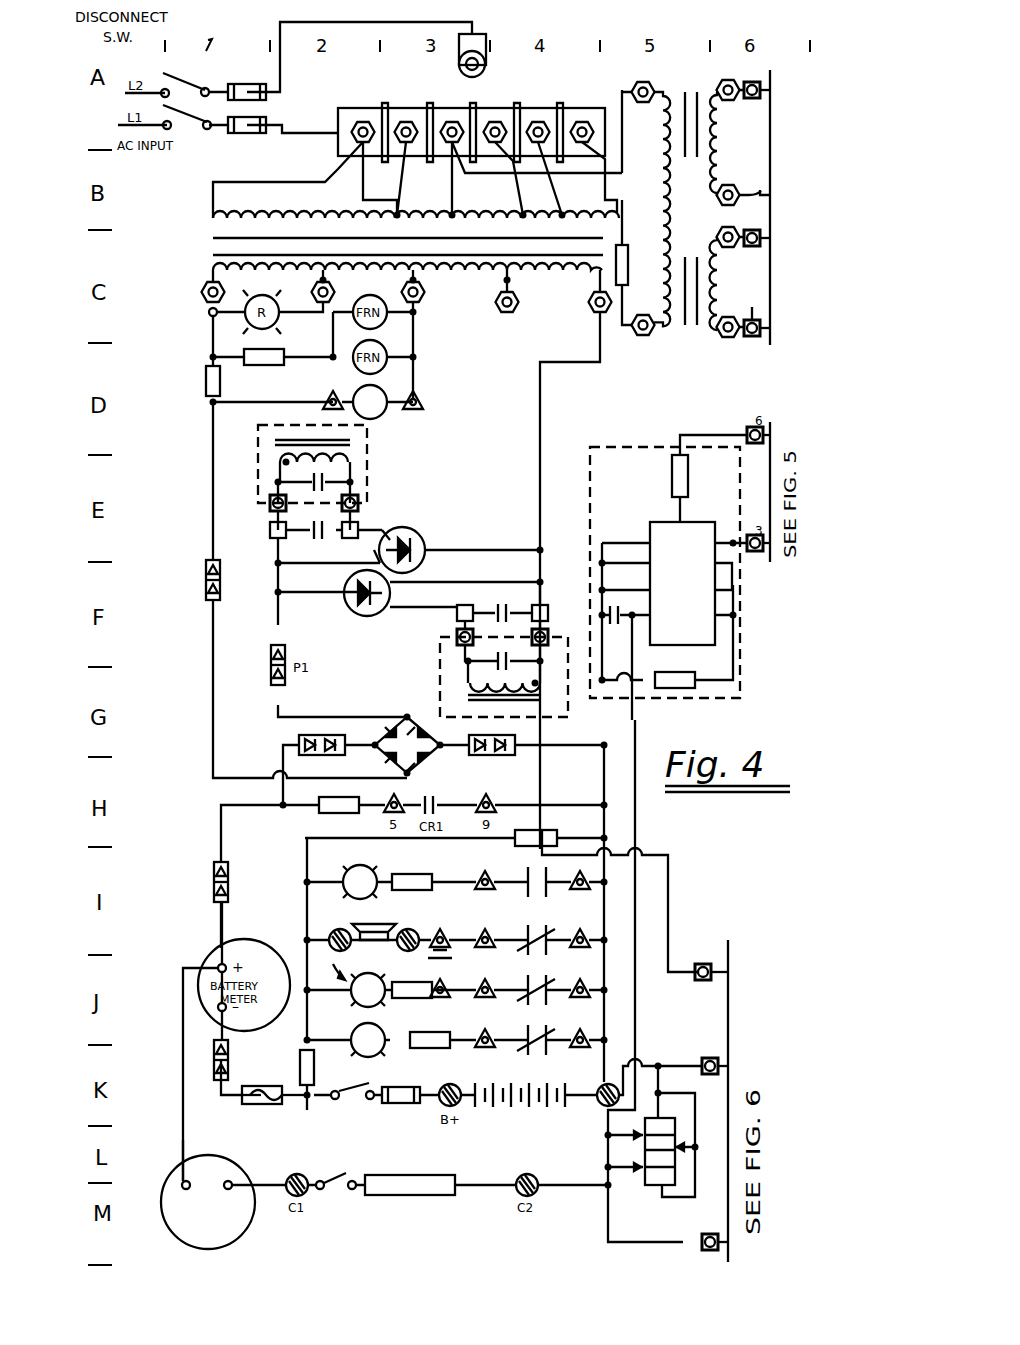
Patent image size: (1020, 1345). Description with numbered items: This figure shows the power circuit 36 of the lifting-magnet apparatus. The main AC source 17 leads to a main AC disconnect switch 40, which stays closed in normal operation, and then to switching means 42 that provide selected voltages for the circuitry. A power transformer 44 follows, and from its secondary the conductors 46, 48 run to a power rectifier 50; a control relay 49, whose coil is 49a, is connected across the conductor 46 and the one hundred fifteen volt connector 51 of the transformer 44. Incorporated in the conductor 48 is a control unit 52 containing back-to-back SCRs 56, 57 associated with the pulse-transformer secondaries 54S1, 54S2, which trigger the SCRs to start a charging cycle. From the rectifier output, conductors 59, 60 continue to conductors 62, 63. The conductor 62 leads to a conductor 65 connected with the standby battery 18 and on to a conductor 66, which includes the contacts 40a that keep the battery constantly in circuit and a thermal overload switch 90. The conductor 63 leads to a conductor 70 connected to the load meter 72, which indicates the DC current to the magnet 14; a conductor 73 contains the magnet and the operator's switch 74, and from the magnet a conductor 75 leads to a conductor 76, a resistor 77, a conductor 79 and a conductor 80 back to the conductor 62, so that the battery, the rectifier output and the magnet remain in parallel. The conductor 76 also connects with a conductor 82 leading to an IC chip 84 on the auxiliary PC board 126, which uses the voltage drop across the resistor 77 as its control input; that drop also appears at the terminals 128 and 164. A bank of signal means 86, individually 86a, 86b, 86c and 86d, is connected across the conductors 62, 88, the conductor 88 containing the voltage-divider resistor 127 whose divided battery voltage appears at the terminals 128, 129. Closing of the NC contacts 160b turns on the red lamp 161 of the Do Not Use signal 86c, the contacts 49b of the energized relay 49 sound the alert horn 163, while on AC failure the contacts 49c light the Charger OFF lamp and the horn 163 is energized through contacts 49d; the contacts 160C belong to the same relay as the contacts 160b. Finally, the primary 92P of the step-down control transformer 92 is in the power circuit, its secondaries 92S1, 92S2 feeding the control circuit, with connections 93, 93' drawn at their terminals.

The power circuit 36 is at (72, 83).
The main AC source 17 is at (233, 34).
The main AC disconnect switch 40 is at (212, 134).
The switching means 42 is at (325, 157).
The power transformer 44 is at (205, 240).
The 115 V connector of the transformer 51 is at (405, 270).
The conductor 46 is at (213, 442).
The conductor 48 is at (540, 394).
The control relay 49 is at (391, 389).
The coil of control relay 49a is at (378, 416).
The control unit 52 is at (376, 465).
The pulse transformer secondary 54S1 is at (364, 444).
The pulse transformer secondary 54S2 is at (458, 690).
The SCR 56 is at (364, 558).
The SCR 57 is at (355, 607).
The power rectifier 50 is at (386, 718).
The conductor 59 is at (453, 750).
The conductor 60 is at (361, 755).
The conductor 62 is at (604, 765).
The conductor 63 is at (218, 840).
The auxiliary PC board 126 is at (588, 435).
The resistor 127 is at (541, 836).
The IC chip 84 is at (706, 655).
The conductor 82 is at (635, 834).
The bank of signal means 86 is at (295, 886).
The signal means 86a is at (347, 874).
The signal means 86b is at (323, 940).
The signal means 86c is at (357, 998).
The signal means 86d is at (323, 1038).
The conductor 88 is at (307, 912).
The sound alert horn 163 is at (398, 920).
The red lamp 161 is at (393, 1003).
The contacts of relay 160C is at (540, 902).
The NC contacts 160b is at (539, 958).
The relay contacts 49b is at (486, 998).
The relay contacts 49c is at (546, 1026).
The relay contacts 49d is at (530, 920).
The conductor 70 is at (183, 1138).
The conductor 66 is at (222, 1093).
The thermal overload switch 90 is at (270, 1108).
The disconnect switch contacts 40a is at (350, 1080).
The standby battery 18 is at (462, 1124).
The conductor 65 is at (582, 1093).
The load meter 72 is at (245, 1208).
The conductor 73 is at (262, 1182).
The operator's switch 74 is at (346, 1168).
The electromagnet 14 is at (454, 1204).
The conductor 75 is at (585, 1185).
The terminal 129 is at (705, 970).
The terminal 128 is at (702, 1060).
The conductor 80 is at (666, 1063).
The conductor 79 is at (683, 1089).
The resistor 77 is at (643, 1196).
The conductor 76 is at (606, 1160).
The terminal 164 is at (692, 1254).
The step-down control transformer 92 is at (690, 337).
The primary of control transformer 92P is at (627, 132).
The secondary of control transformer 92S1 is at (718, 311).
The secondary of control transformer 92S2 is at (718, 168).
The conductor 93 is at (786, 350).
The conductor 93' is at (791, 182).